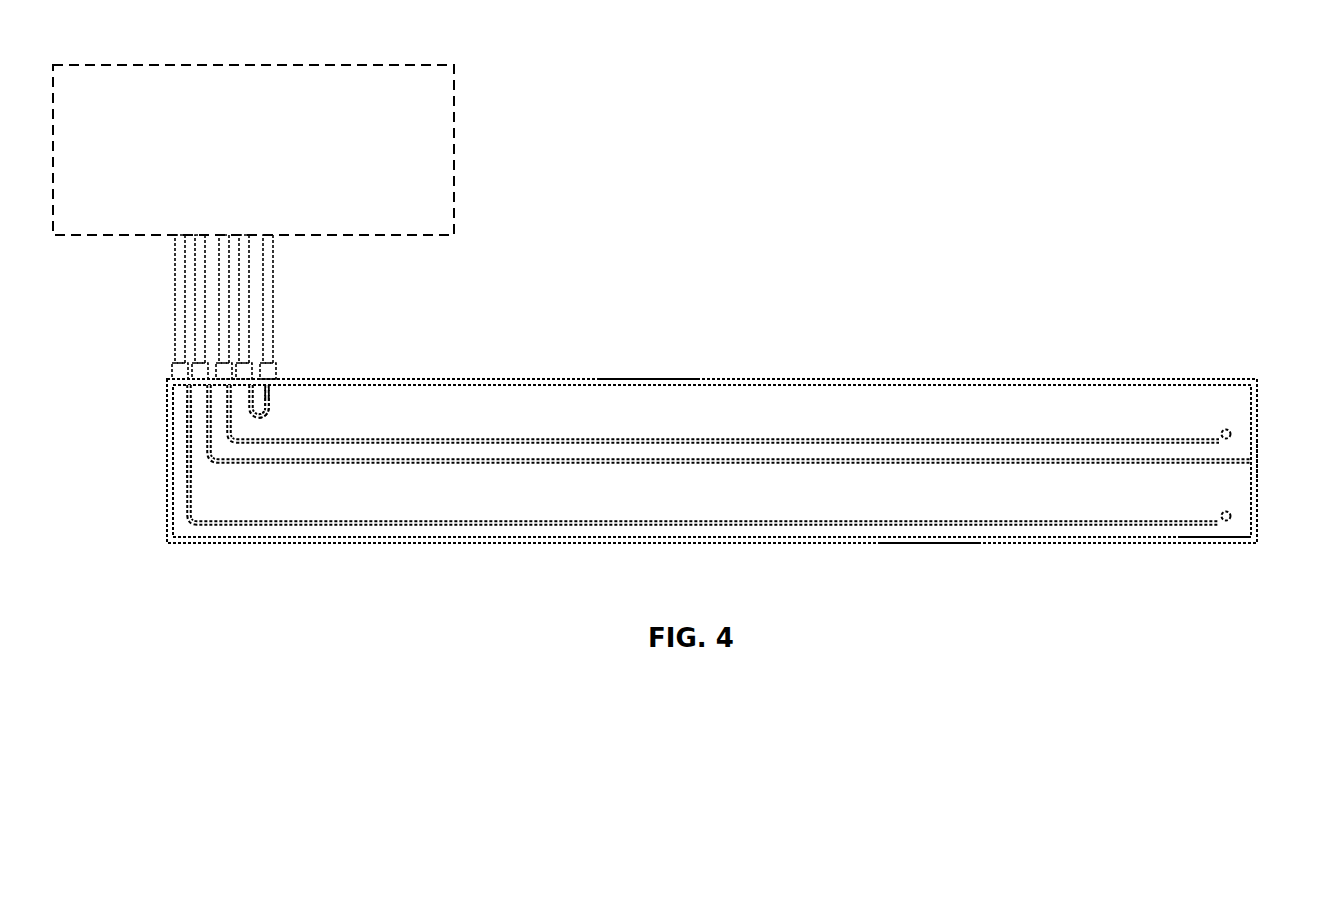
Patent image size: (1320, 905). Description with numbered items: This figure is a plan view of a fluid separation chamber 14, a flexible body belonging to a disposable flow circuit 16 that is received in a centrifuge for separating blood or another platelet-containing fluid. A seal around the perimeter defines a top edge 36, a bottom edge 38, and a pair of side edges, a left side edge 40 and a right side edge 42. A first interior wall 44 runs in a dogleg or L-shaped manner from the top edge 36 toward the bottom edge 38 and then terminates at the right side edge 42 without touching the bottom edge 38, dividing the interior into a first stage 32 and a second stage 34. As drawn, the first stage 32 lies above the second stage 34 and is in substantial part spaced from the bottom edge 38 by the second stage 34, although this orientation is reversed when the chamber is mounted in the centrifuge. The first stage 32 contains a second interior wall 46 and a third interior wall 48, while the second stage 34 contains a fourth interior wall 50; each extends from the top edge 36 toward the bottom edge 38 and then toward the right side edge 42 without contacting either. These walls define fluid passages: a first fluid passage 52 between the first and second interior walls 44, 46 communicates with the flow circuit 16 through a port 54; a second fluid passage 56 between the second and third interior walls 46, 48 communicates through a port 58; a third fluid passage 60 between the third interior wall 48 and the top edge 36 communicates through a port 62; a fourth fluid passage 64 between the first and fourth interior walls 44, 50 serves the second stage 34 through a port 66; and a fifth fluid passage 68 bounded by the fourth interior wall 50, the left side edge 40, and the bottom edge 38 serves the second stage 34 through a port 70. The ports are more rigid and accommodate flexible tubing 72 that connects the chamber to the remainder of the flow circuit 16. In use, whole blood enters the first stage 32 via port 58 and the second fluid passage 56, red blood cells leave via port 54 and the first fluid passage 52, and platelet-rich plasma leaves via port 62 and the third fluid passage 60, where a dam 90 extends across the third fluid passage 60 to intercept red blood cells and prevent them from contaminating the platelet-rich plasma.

The fluid separation chamber 14 is at (688, 406).
The disposable flow circuit 16 is at (269, 164).
The first stage 32 is at (730, 413).
The second stage 34 is at (701, 468).
The top edge 36 is at (640, 379).
The bottom edge 38 is at (932, 545).
The left side edge 40 is at (168, 503).
The right side edge 42 is at (1257, 457).
The first interior wall 44 is at (1183, 463).
The second interior wall 46 is at (540, 438).
The third interior wall 48 is at (255, 418).
The fourth interior wall 50 is at (512, 520).
The first fluid passage 52 is at (430, 447).
The port 54 is at (225, 366).
The second fluid passage 56 is at (273, 369).
The port 58 is at (250, 383).
The third fluid passage 60 is at (268, 400).
The port 62 is at (274, 388).
The fourth fluid passage 64 is at (196, 435).
The port 66 is at (198, 368).
The fifth fluid passage 68 is at (710, 458).
The port 70 is at (172, 372).
The flexible tubing 72 is at (175, 261).
The dam 90 is at (276, 401).